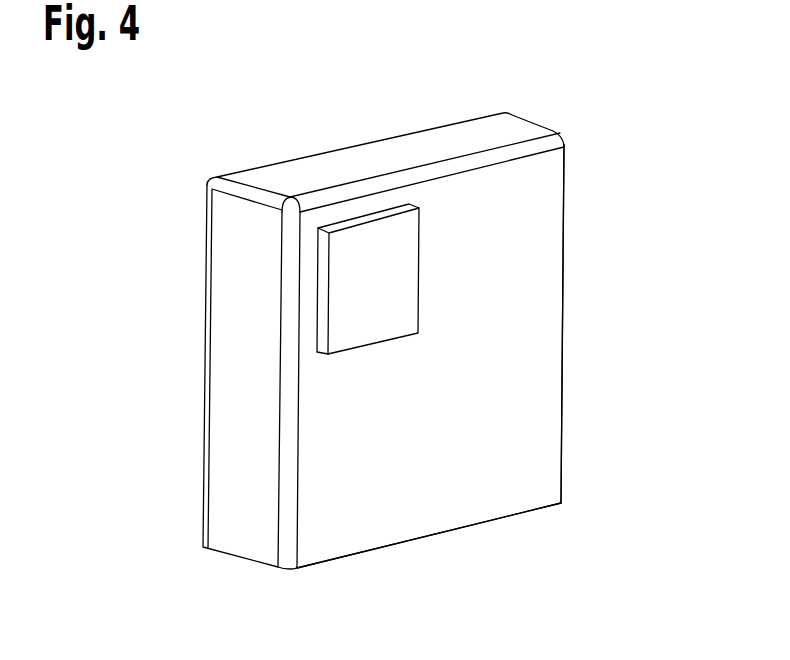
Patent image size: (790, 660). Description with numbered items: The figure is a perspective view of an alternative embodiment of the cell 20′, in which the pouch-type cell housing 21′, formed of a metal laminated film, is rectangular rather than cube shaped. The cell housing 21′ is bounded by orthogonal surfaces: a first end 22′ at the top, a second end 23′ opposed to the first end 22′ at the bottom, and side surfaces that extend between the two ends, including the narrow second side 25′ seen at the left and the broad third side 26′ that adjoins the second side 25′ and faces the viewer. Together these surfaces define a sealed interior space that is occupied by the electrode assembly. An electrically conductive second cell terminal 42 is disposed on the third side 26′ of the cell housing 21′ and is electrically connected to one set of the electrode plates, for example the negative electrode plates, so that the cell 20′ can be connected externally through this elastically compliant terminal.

The cell 20′ is at (623, 106).
The cell housing 21′ is at (547, 252).
The first end 22′ is at (330, 170).
The second end 23′ is at (505, 495).
The second side 25′ is at (230, 325).
The third side 26′ is at (547, 327).
The second cell terminal 42 is at (392, 296).